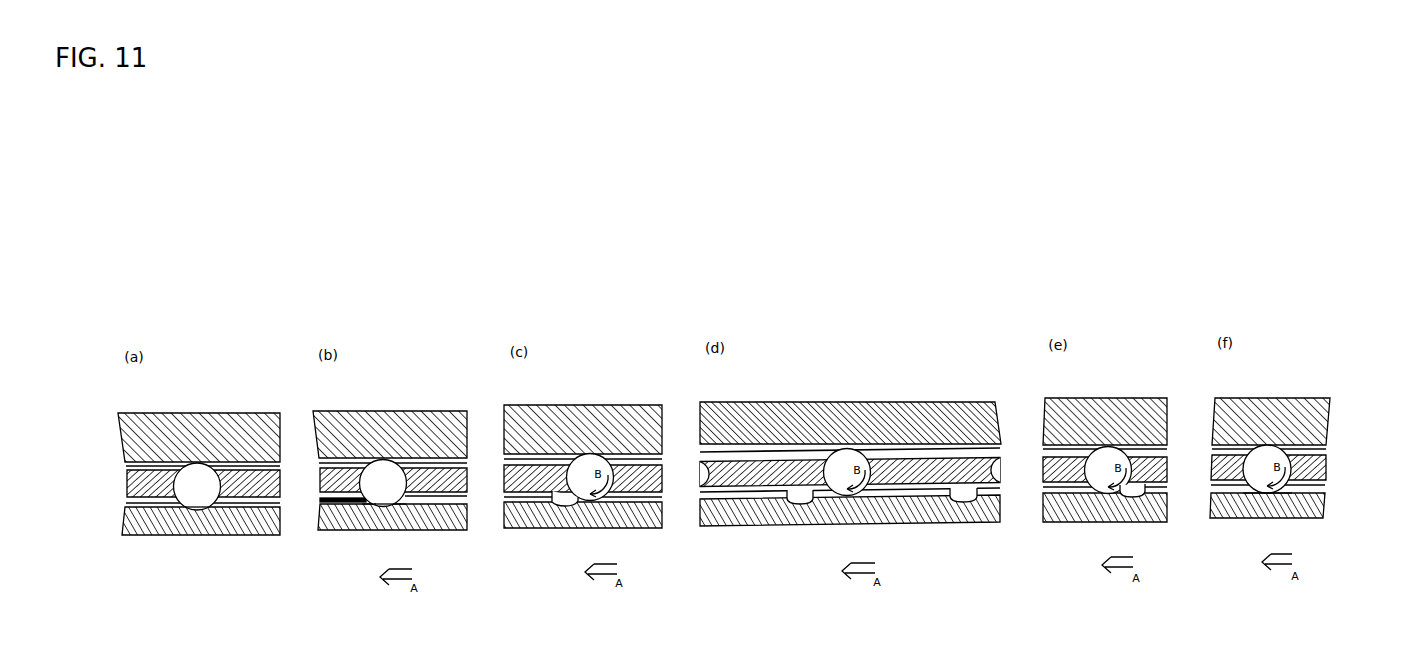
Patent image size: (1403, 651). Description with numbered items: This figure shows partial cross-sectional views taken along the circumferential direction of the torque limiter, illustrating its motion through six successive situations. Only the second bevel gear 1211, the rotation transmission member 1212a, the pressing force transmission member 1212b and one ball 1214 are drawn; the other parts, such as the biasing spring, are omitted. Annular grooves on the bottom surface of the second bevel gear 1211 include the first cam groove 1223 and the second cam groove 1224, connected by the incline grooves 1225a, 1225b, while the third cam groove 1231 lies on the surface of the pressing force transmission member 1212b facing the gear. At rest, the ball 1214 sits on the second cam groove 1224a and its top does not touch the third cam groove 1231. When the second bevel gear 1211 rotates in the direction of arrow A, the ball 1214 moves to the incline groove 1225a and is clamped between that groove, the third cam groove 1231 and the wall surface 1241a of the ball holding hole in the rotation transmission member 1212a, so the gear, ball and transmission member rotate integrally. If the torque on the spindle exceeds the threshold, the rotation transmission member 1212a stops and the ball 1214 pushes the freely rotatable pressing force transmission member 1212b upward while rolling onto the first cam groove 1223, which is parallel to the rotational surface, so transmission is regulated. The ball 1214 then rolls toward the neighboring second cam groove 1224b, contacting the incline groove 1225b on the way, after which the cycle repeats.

The second bevel gear 1211 is at (132, 528).
The rotation transmission member 1212a is at (135, 485).
The pressing force transmission member 1212b is at (128, 445).
The ball 1214 is at (205, 473).
The first cam groove 1223 is at (160, 507).
The second cam groove 1224 is at (195, 513).
The second cam groove 1224a is at (380, 506).
The second cam groove 1224b is at (962, 499).
The incline groove 1225a is at (385, 508).
The incline groove 1225b is at (368, 505).
The third cam groove 1231 is at (163, 462).
The wall surface 1241a is at (322, 499).